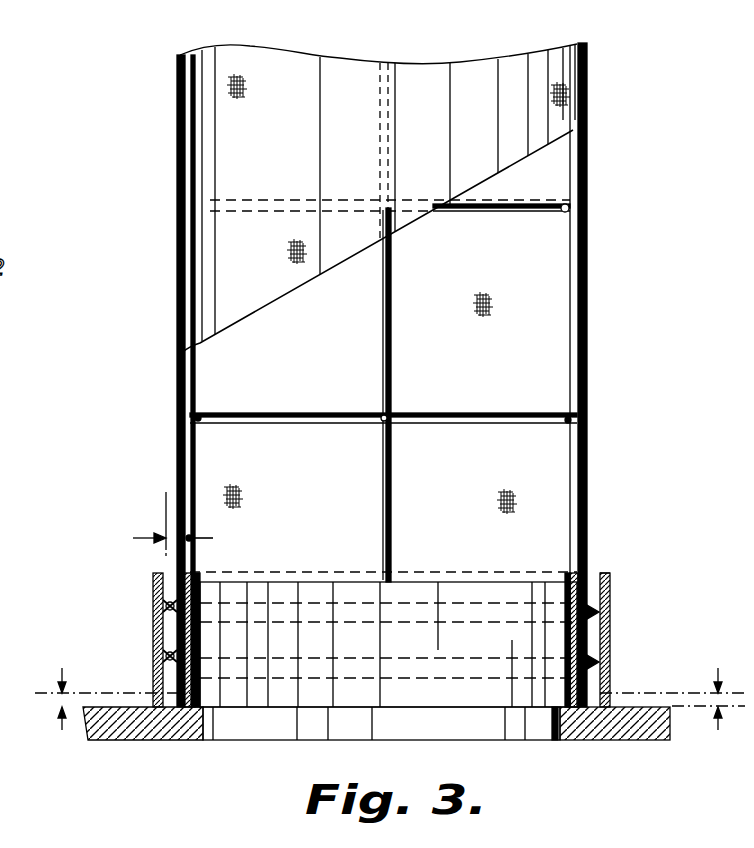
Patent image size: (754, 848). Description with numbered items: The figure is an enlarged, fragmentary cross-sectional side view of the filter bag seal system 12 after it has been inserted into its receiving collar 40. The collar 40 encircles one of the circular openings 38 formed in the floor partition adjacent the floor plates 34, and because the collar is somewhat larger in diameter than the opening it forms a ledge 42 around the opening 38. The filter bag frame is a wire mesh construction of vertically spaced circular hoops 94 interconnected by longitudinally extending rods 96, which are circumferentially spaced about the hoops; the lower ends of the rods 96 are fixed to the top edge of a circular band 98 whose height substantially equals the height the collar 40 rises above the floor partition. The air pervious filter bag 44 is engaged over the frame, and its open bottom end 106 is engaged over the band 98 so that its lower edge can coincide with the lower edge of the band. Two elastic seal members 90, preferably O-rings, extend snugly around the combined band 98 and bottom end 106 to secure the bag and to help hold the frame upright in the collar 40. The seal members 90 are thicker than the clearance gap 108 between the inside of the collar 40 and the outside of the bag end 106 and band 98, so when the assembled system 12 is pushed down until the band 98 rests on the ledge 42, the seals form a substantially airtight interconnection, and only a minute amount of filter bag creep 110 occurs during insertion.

The filter bag seal system 12 is at (642, 607).
The floor plates 34 is at (118, 735).
The circular openings 38 is at (355, 728).
The receiving collar 40 is at (612, 647).
The ledge 42 is at (562, 695).
The filter bag 44 is at (285, 72).
The elastic seal member 90 is at (155, 597).
The circular hoops 94 is at (498, 204).
The longitudinally extending rods 96 is at (582, 227).
The circular band 98 is at (500, 585).
The open bottom end 106 is at (155, 640).
The clearance gap 108 is at (168, 535).
The filter bag creep 110 is at (60, 698).